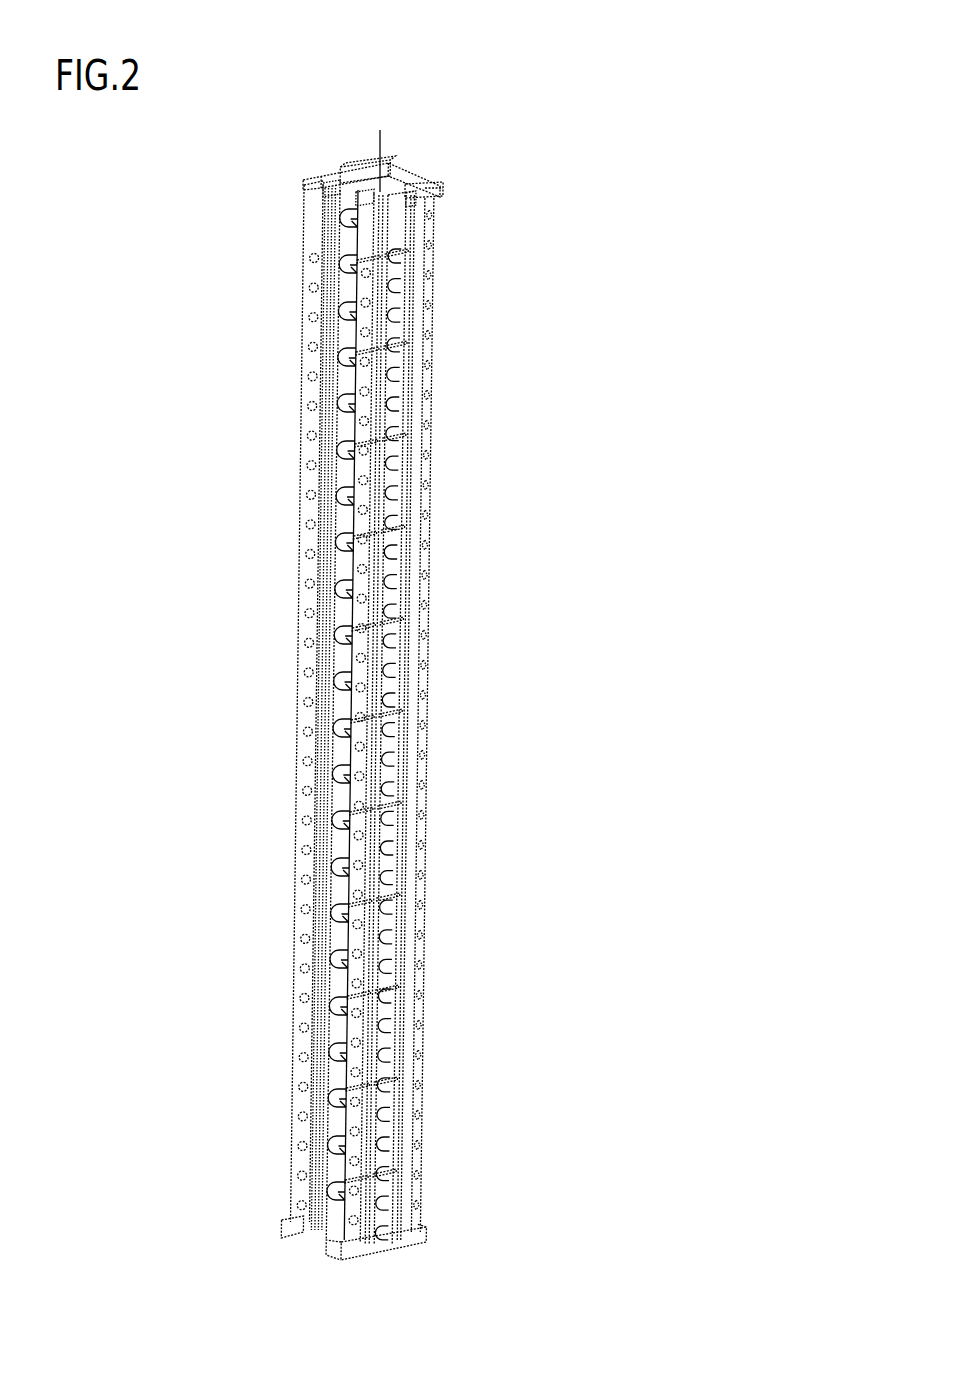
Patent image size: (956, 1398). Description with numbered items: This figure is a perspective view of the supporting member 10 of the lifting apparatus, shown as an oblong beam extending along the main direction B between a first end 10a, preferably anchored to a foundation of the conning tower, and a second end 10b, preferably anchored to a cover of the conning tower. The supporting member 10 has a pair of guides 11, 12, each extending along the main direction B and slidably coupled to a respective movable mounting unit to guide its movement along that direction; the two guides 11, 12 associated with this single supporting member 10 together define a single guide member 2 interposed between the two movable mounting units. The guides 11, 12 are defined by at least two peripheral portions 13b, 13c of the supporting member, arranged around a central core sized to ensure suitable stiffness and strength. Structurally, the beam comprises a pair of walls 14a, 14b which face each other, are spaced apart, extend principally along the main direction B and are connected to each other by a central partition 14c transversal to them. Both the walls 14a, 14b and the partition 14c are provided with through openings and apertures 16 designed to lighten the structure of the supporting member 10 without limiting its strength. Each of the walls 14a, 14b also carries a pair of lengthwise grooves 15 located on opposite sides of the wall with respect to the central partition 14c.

The guide member 2 is at (497, 465).
The supporting member 10 is at (444, 223).
The first end 10a is at (395, 1247).
The second end 10b is at (430, 192).
The guide 11 is at (392, 161).
The guide 12 is at (324, 325).
The peripheral portion 13b is at (440, 175).
The peripheral portion 13c is at (303, 178).
The wall 14a is at (443, 195).
The wall 14b is at (367, 158).
The central partition 14c is at (392, 202).
The lengthwise grooves 15 is at (363, 157).
The through openings and apertures 16 is at (311, 591).
The main direction B is at (380, 134).